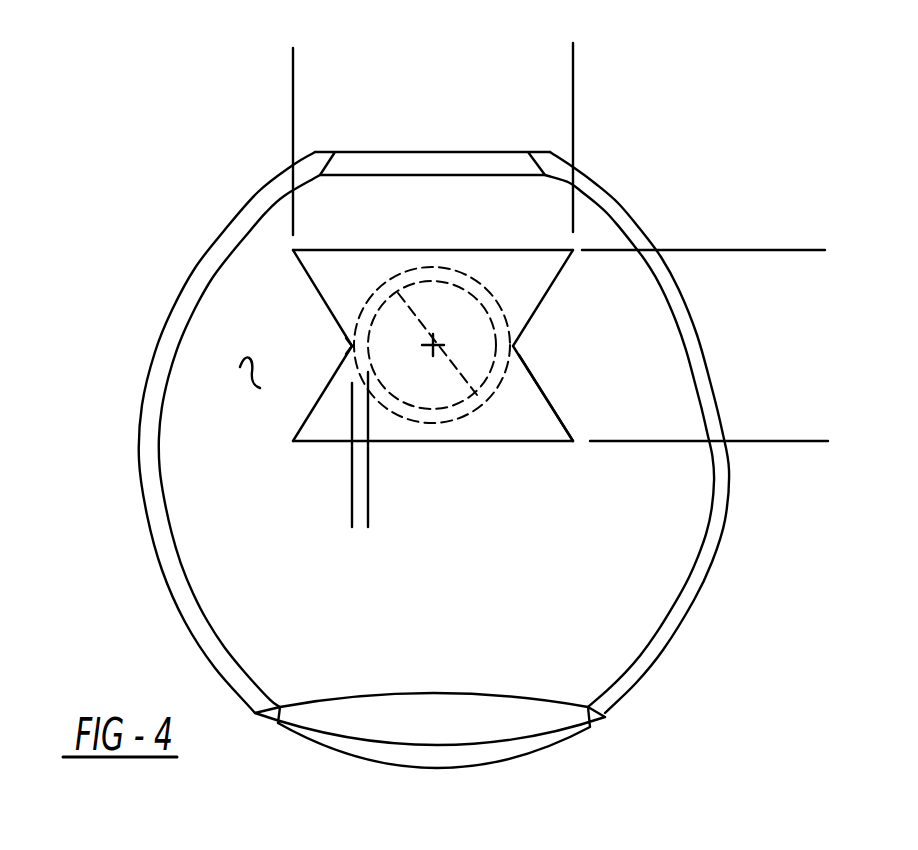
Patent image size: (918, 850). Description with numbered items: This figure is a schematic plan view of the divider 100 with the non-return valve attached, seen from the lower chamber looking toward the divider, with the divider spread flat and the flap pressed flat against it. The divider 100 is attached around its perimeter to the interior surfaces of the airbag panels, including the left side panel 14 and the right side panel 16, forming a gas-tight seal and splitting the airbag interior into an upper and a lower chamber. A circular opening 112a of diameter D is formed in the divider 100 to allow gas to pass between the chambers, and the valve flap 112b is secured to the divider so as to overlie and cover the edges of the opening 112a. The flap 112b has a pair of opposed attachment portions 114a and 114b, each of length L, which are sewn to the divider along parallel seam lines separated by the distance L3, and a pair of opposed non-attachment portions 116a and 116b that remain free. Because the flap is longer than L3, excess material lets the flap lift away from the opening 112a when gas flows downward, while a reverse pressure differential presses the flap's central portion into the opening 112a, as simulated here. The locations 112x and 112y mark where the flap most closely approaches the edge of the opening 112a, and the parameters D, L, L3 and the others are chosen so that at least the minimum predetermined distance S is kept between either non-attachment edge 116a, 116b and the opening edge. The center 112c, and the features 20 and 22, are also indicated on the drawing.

The left side panel 14 is at (223, 232).
The right side panel 16 is at (670, 636).
The bottom member 20 is at (377, 762).
The top plate 22 is at (477, 162).
The divider 100 is at (240, 367).
The circular opening 112a is at (480, 300).
The valve flap 112b is at (322, 422).
The center of opening 112c is at (436, 345).
The location of closest approach 112x is at (350, 347).
The location of closest approach 112y is at (513, 346).
The attachment portion 114a is at (350, 441).
The attachment portion 114b is at (390, 250).
The non-attachment portion 116a is at (323, 302).
The non-attachment portion 116b is at (545, 393).
The diameter of the opening D is at (478, 398).
The minimum predetermined distance S is at (410, 512).
The length of the attachment edges L is at (573, 63).
The distance between seam lines on the divider L3 is at (815, 250).